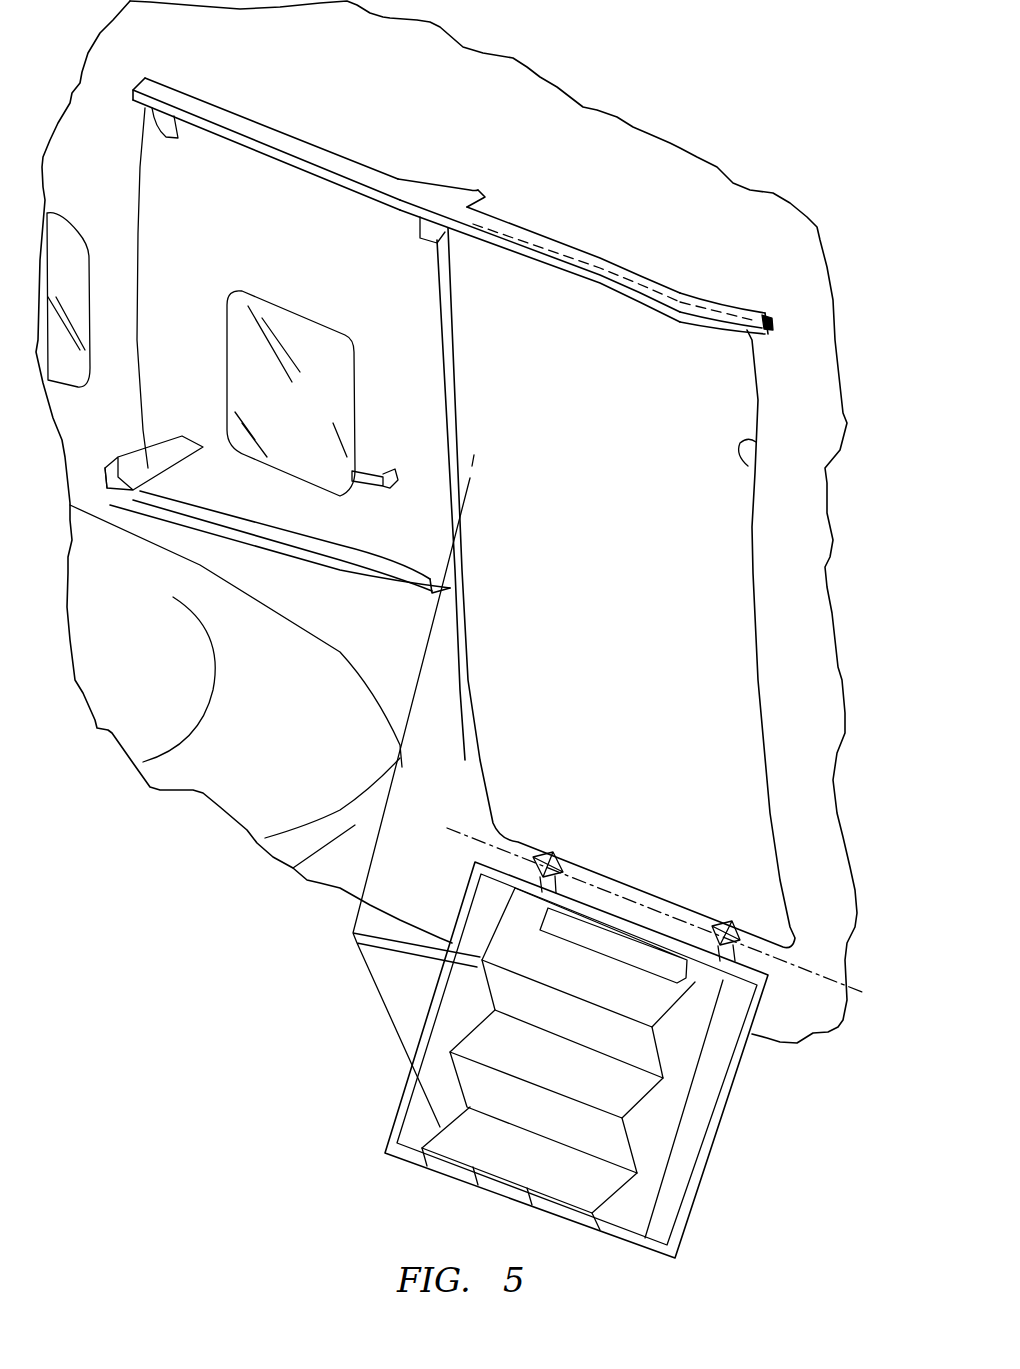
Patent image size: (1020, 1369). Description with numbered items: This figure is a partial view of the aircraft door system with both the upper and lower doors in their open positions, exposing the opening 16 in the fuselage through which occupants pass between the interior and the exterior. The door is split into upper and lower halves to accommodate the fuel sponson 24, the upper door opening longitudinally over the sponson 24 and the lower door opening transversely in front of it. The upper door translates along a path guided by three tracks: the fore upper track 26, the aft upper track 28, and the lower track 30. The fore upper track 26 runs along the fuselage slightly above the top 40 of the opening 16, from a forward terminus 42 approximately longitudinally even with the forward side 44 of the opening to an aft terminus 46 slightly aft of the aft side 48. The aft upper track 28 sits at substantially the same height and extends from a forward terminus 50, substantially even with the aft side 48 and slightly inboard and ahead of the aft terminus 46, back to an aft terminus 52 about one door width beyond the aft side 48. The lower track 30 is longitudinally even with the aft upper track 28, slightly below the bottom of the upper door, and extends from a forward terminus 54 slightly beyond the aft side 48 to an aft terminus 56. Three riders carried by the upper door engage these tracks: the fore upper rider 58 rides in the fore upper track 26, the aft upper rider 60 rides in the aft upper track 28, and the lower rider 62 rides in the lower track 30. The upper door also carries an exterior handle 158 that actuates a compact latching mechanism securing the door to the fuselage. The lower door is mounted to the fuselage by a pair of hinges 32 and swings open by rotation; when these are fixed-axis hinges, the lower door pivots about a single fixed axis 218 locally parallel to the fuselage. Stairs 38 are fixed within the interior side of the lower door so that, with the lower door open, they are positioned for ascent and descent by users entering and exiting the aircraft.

The opening 16 is at (738, 833).
The fuel sponson 24 is at (343, 768).
The fore upper track 26 is at (602, 270).
The aft upper track 28 is at (263, 133).
The lower track 30 is at (328, 556).
The hinges 32 is at (550, 858).
The stairs 38 is at (610, 1152).
The top of the opening 40 is at (678, 316).
The forward terminus of the fore upper track 42 is at (768, 307).
The forward side of the opening 44 is at (748, 466).
The aft terminus of the fore upper track 46 is at (432, 205).
The aft side of the opening 48 is at (455, 372).
The forward terminus of the aft upper track 50 is at (478, 184).
The aft terminus of the aft upper track 52 is at (152, 80).
The forward terminus of the lower track 54 is at (423, 598).
The aft terminus of the lower track 56 is at (98, 488).
The fore upper rider 58 is at (433, 233).
The aft upper rider 60 is at (165, 134).
The lower rider 62 is at (163, 452).
The exterior handle 158 is at (360, 474).
The fixed axis 218 is at (870, 988).